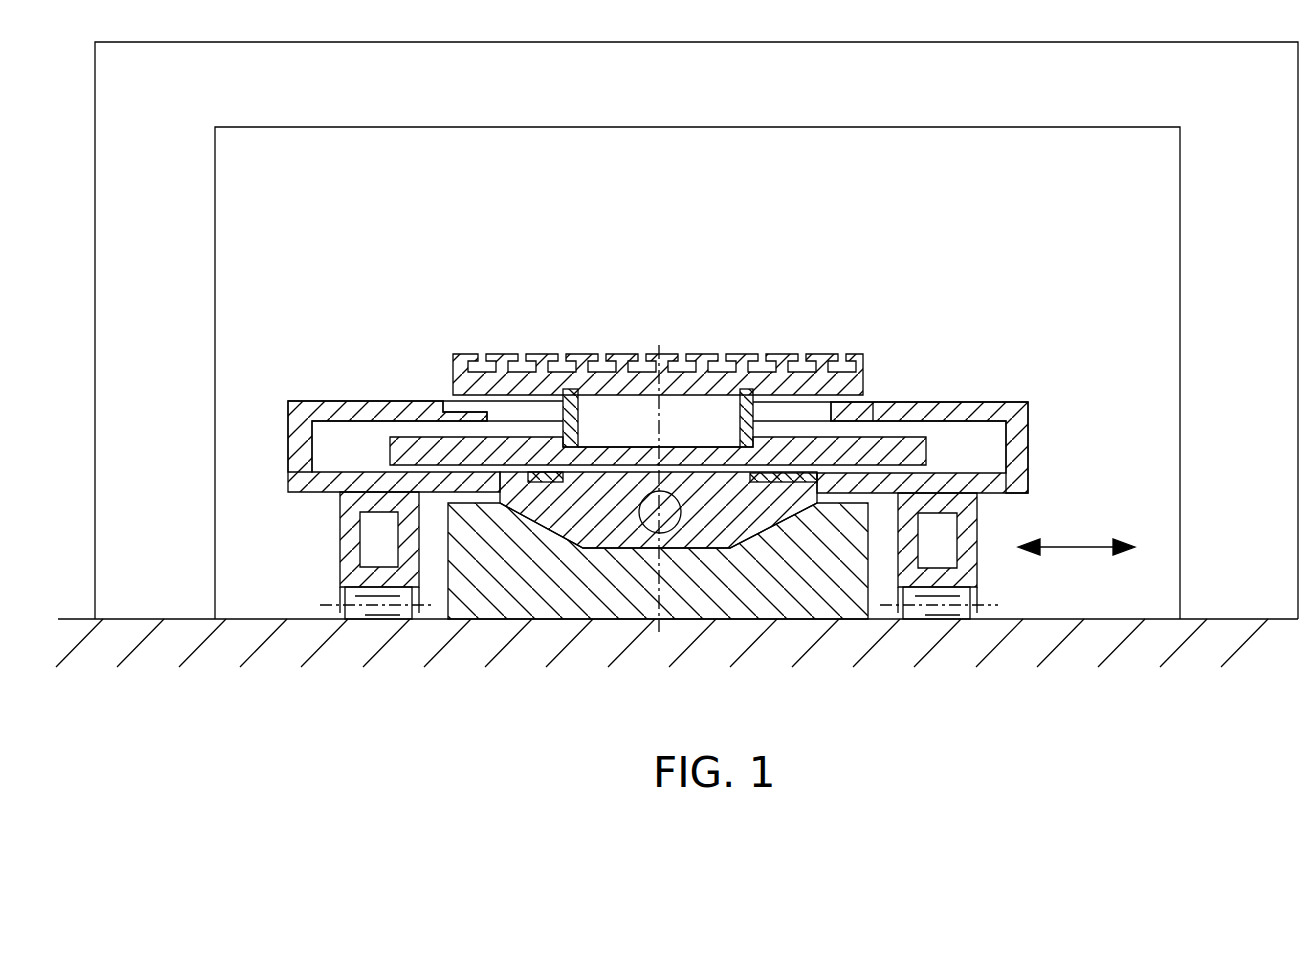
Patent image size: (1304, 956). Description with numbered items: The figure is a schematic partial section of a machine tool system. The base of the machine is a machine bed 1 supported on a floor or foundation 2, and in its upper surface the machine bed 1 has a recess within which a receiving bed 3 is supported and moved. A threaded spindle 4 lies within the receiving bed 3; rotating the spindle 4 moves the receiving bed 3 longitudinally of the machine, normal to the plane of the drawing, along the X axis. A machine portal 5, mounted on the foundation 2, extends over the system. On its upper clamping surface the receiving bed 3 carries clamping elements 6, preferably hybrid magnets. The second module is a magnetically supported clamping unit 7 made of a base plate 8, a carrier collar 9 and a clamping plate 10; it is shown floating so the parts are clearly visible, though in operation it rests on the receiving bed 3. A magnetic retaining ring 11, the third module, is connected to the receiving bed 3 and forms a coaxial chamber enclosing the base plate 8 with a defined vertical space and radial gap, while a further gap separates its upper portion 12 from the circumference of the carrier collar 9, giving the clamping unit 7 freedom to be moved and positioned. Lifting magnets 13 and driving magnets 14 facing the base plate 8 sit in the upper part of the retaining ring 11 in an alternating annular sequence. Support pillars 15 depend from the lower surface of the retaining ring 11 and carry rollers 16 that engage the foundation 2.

The machine bed 1 is at (755, 600).
The foundation 2 is at (1000, 622).
The receiving bed 3 is at (583, 520).
The threaded spindle 4 is at (667, 532).
The machine portal 5 is at (1018, 70).
The clamping elements 6 is at (773, 480).
The clamping unit 7 is at (693, 413).
The base plate 8 is at (398, 455).
The carrier collar 9 is at (565, 429).
The clamping plate 10 is at (813, 378).
The magnetic retaining ring 11 is at (360, 408).
The upper portion of the magnetic retaining ring 12 is at (387, 408).
The lifting magnets 13 is at (870, 420).
The driving magnets 14 is at (890, 410).
The support pillars 15 is at (357, 553).
The rollers 16 is at (345, 608).